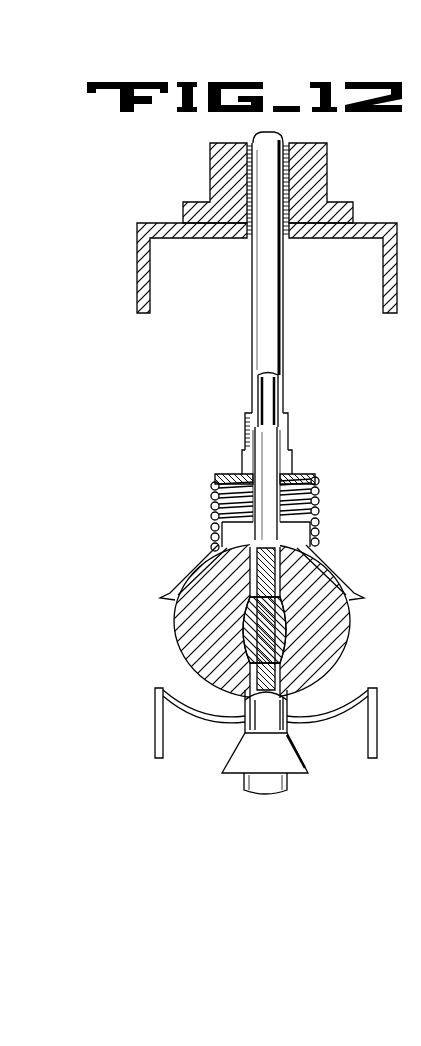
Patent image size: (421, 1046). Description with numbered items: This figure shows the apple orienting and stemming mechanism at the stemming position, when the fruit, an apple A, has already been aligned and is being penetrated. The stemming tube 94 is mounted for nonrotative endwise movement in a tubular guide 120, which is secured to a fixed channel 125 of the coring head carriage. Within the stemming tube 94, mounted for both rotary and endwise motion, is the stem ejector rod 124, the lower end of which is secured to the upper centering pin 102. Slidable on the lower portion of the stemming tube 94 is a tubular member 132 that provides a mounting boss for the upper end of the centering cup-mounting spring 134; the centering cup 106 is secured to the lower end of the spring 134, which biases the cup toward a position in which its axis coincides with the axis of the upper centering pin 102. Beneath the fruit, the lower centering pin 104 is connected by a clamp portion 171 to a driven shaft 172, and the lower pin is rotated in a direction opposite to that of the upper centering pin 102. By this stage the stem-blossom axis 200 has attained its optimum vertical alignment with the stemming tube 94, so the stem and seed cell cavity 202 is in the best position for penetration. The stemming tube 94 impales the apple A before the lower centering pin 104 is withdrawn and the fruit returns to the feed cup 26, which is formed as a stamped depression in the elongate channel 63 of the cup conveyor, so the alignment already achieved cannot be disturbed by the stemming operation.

The tubular guide 120 is at (312, 163).
The fixed channel 125 is at (138, 277).
The stemming tube 94 is at (252, 348).
The stem ejector rod 124 is at (280, 390).
The upper centering pin 102 is at (265, 448).
The tubular member 132 is at (300, 466).
The centering cup-mounting spring 134 is at (322, 497).
The centering cup 106 is at (337, 582).
The apple A is at (350, 628).
The stem and seed cell cavity 202 is at (255, 625).
The feed cup 26 is at (350, 697).
The elongate channel 63 is at (155, 737).
The stem-blossom axis 200 is at (233, 708).
The lower centering pin 104 is at (288, 724).
The clamp portion 171 is at (303, 769).
The driven shaft 172 is at (257, 794).